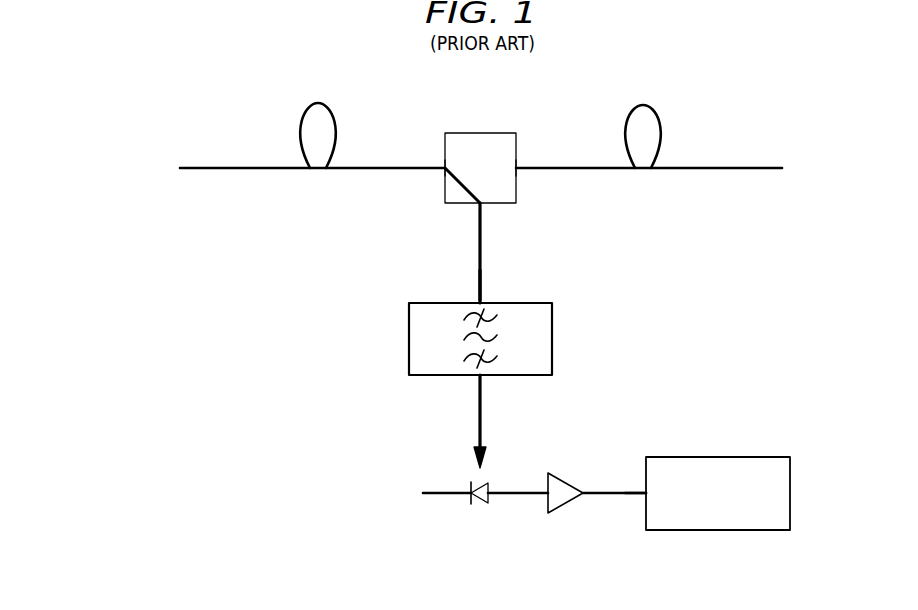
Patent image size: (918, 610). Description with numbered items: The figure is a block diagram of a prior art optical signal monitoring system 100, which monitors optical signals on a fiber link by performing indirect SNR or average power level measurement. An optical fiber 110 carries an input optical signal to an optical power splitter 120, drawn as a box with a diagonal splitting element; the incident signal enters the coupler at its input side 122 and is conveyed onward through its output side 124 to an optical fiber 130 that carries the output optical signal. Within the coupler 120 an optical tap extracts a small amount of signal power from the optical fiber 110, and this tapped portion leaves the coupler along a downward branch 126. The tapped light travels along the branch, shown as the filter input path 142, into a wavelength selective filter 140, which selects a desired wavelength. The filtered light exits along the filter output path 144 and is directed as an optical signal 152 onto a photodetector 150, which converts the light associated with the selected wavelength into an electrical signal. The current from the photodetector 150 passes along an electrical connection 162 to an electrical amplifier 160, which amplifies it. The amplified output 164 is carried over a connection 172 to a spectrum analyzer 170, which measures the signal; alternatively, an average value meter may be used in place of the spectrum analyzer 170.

The optical signal monitoring system 100 is at (162, 290).
The optical fiber 110 is at (234, 166).
The optical power splitter 120 is at (478, 132).
The tap input port 122 is at (443, 170).
The tap output port 124 is at (517, 167).
The tap output path 126 is at (483, 206).
The optical fiber 130 is at (727, 166).
The wavelength selective filter 140 is at (553, 338).
The filter input 142 is at (482, 300).
The filter output 144 is at (482, 378).
The photodetector 150 is at (470, 504).
The optical signal to detector 152 is at (485, 460).
The electrical amplifier 160 is at (564, 504).
The amplifier input 162 is at (538, 495).
The amplifier output 164 is at (584, 492).
The spectrum analyzer 170 is at (730, 456).
The spectrum analyzer input 172 is at (637, 496).